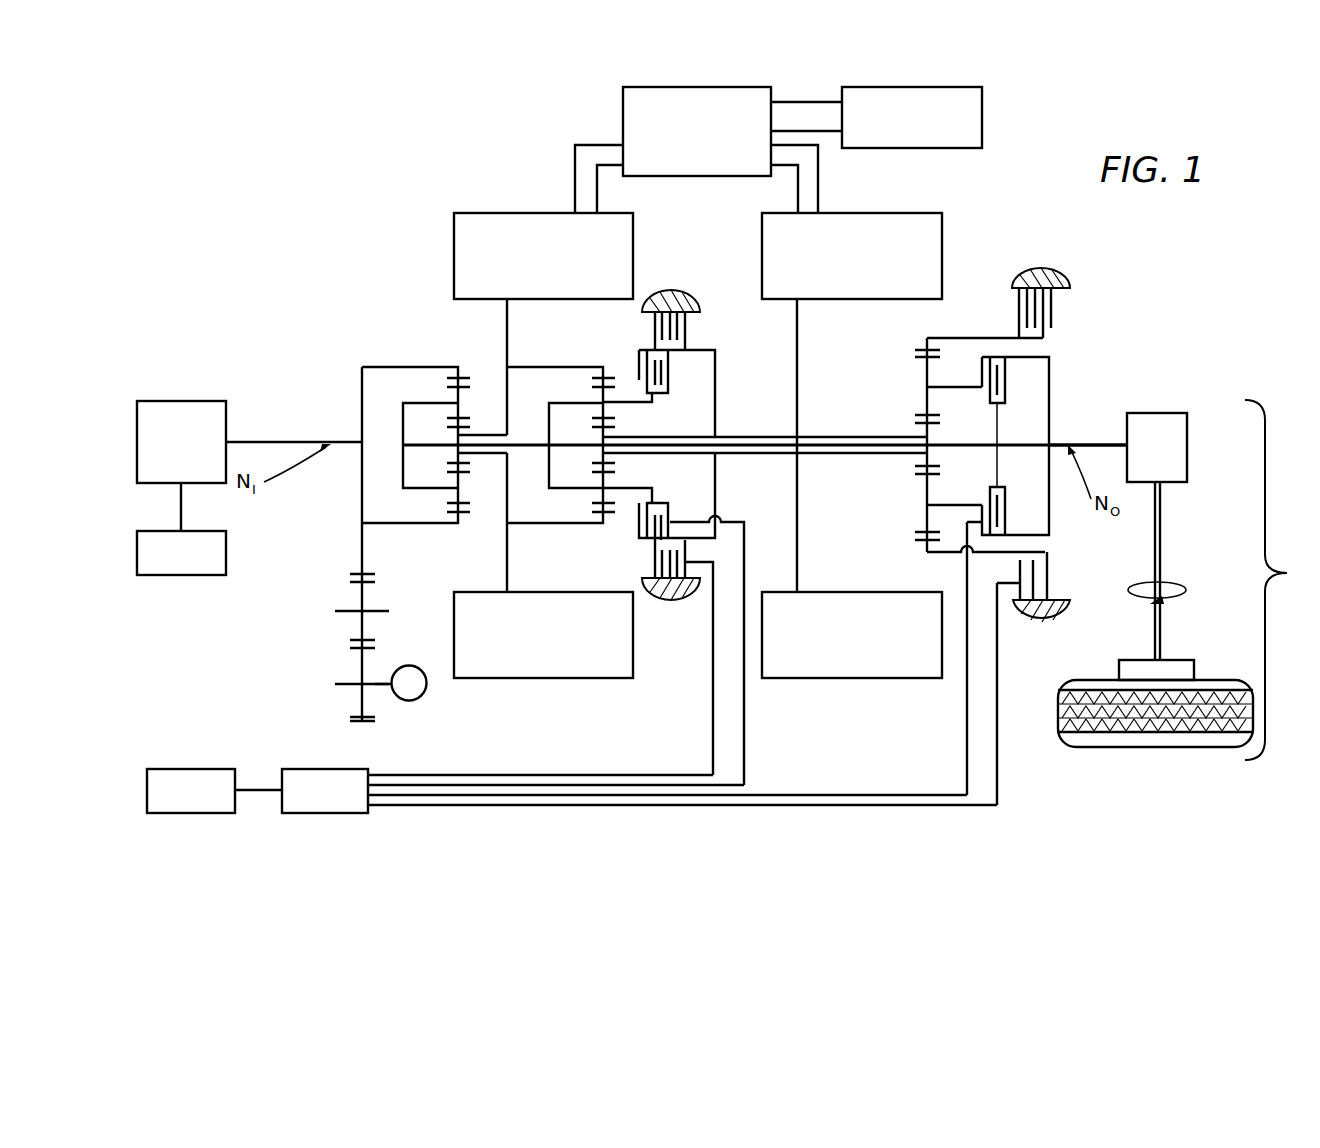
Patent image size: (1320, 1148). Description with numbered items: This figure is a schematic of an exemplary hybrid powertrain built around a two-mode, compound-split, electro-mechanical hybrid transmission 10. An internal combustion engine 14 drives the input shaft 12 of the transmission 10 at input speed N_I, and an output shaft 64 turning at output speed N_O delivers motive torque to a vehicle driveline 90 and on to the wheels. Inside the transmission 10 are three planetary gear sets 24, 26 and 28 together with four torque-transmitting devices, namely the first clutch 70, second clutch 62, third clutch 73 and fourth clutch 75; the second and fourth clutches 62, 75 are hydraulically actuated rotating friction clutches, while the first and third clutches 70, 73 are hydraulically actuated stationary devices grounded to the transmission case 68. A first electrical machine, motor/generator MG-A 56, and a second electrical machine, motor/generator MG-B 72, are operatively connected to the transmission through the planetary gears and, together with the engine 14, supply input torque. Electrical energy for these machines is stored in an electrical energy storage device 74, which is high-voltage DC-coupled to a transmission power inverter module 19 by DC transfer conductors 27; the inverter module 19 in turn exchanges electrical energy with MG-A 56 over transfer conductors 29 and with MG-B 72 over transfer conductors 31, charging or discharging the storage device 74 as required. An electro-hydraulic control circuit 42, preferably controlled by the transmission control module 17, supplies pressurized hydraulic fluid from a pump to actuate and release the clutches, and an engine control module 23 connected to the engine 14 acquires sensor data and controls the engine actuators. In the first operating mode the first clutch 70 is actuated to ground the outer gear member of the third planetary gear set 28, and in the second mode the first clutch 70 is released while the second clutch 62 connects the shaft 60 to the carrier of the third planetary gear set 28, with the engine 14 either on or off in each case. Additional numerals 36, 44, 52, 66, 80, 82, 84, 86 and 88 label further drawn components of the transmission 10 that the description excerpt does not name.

The transmission 10 is at (420, 181).
The input shaft 12 is at (326, 440).
The engine 14 is at (186, 400).
The transmission control module (TCM) 17 is at (183, 769).
The transmission power inverter module (TPIM) 19 is at (623, 102).
The engine control module (ECM) 23 is at (226, 568).
The first planetary gear set 24 is at (434, 419).
The second planetary gear set 26 is at (561, 419).
The DC transfer conductors 27 is at (789, 102).
The third planetary gear set 28 is at (923, 343).
The transfer conductors 29 is at (575, 178).
The transfer conductors 31 is at (818, 172).
The carrier member of first planetary gear set 36 is at (402, 470).
The electro-hydraulic control circuit 42 is at (296, 769).
The carrier member of second planetary gear set 44 is at (549, 473).
The ring gear member / clutch C2 housing 52 is at (1049, 437).
The motor/generator MG-A 56 is at (408, 232).
The shaft 60 is at (775, 445).
The clutch C2 62 is at (1022, 393).
The output shaft 64 is at (1100, 440).
The shaft connecting gear sets 66 is at (748, 437).
The transmission case 68 is at (668, 290).
The clutch C1 70 is at (1011, 308).
The motor/generator MG-B 72 is at (982, 218).
The clutch C3 73 is at (688, 333).
The electrical energy storage device (ESD) 74 is at (982, 106).
The clutch C4 75 is at (670, 379).
The input member shaft 80 is at (362, 488).
The gear 82 is at (362, 603).
The gear 84 is at (362, 700).
The pump drive connection 86 is at (381, 686).
The hydraulic pump 88 is at (426, 698).
The driveline 90 is at (1287, 573).